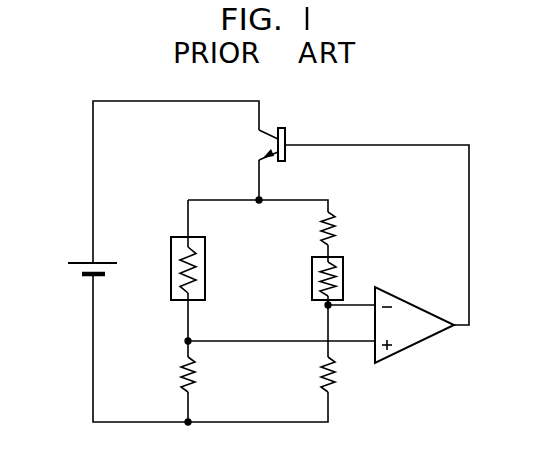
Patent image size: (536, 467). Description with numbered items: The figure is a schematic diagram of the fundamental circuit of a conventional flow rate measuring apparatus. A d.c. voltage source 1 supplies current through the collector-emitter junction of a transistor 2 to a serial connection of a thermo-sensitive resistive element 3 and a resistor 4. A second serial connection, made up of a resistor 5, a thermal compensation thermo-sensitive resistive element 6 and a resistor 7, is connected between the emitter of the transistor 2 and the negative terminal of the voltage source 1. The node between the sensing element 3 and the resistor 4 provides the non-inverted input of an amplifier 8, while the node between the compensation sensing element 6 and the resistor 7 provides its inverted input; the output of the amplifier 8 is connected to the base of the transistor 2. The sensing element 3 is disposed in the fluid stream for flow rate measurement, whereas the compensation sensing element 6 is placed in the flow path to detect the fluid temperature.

The d.c. voltage source 1 is at (71, 268).
The transistor 2 is at (259, 139).
The thermo-sensitive resistive element 3 is at (171, 257).
The resistor 4 is at (181, 368).
The resistor 5 is at (322, 231).
The thermal compensation thermo-sensitive resistive element 6 is at (312, 280).
The resistor 7 is at (321, 370).
The amplifier 8 is at (417, 304).